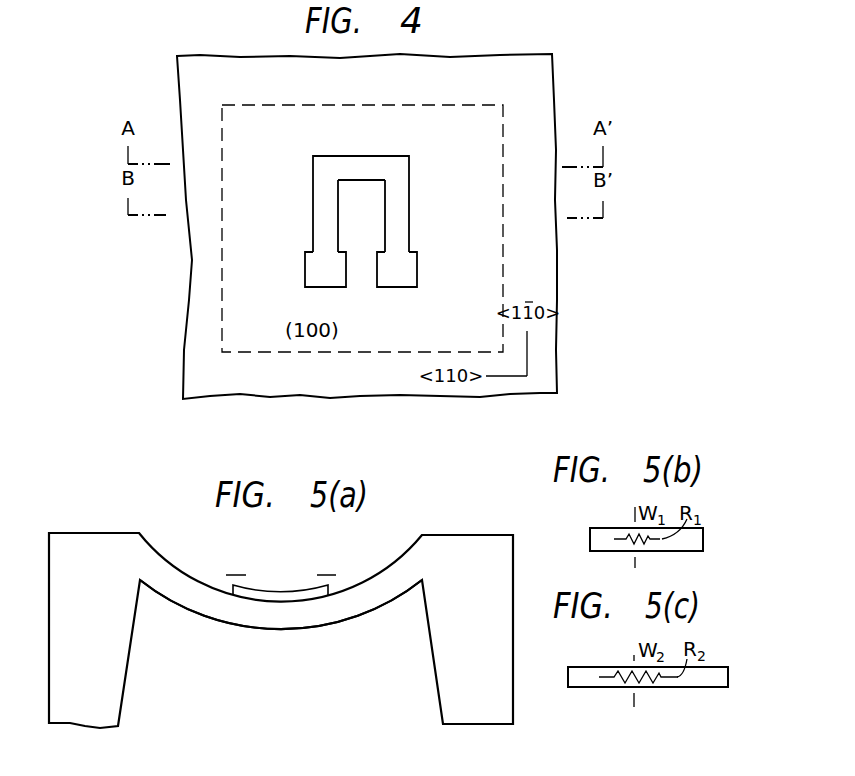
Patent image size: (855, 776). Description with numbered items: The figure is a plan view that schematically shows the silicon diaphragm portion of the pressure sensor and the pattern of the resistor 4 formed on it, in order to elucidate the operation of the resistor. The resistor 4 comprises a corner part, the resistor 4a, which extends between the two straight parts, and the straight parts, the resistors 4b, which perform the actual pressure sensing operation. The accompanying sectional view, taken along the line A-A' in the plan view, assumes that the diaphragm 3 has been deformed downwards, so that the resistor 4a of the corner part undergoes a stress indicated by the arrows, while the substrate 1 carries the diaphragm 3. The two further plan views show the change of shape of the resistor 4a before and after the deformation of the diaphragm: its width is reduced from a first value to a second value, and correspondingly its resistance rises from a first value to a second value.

In FIG. 4, the silicon substrate (single crystal wafer) 1 is at (537, 117).
In FIG. 5A, the silicon substrate (single crystal wafer) 1 is at (503, 608).
In FIG. 5A, the diaphragm 3 is at (380, 597).
In FIG. 4, the resistor 4 is at (408, 273).
In FIG. 4, the resistor of the corner part 4a is at (370, 164).
In FIG. 5A, the resistor of the corner part 4a is at (280, 596).
In FIG. 5B, the resistor of the corner part 4a is at (600, 537).
In FIG. 5C, the resistor of the corner part 4a is at (577, 678).
In FIG. 4, the resistors of the straight parts 4b is at (327, 227).